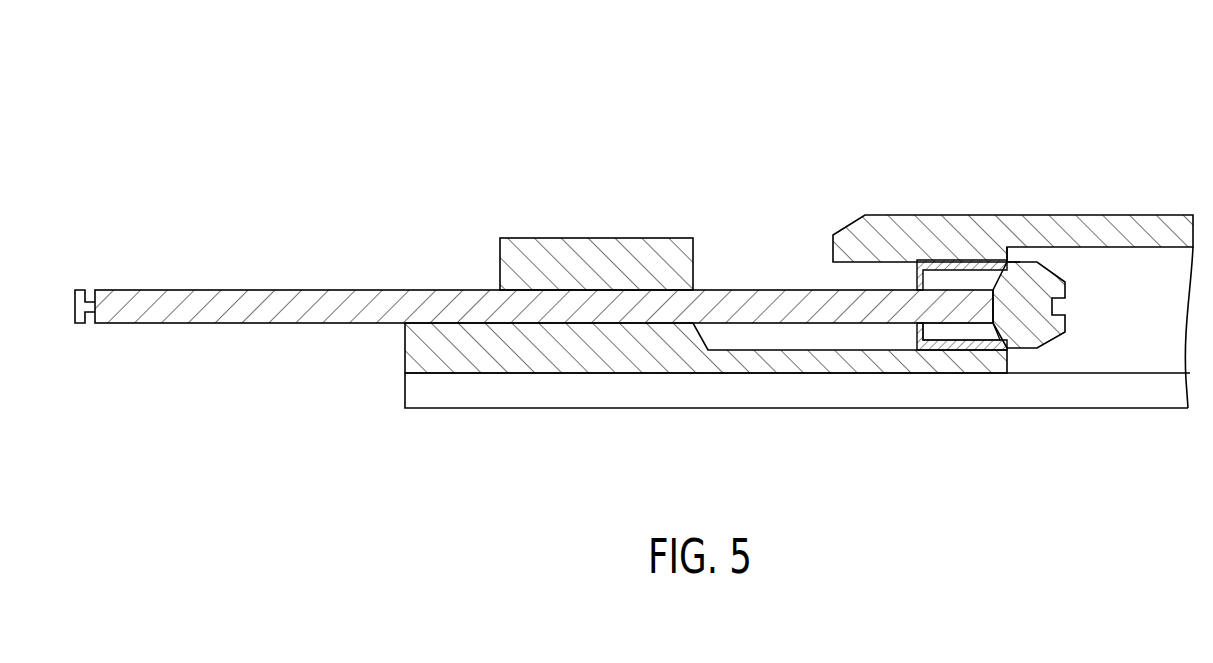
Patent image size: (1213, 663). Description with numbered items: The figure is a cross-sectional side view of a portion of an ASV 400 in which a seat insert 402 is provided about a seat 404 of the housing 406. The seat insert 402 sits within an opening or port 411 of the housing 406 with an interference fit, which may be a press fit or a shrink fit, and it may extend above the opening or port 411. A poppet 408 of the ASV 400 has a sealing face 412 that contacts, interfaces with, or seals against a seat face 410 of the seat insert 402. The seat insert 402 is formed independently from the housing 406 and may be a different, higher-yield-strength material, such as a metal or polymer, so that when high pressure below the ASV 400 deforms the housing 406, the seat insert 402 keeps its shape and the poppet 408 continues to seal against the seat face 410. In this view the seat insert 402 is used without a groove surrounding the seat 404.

The ASV 400 is at (1122, 90).
The seat insert 402 is at (953, 259).
The seat 404 is at (999, 370).
The housing 406 is at (593, 237).
The poppet 408 is at (237, 289).
The seat face 410 is at (1017, 352).
The opening or port 411 is at (969, 336).
The sealing face 412 is at (1014, 255).